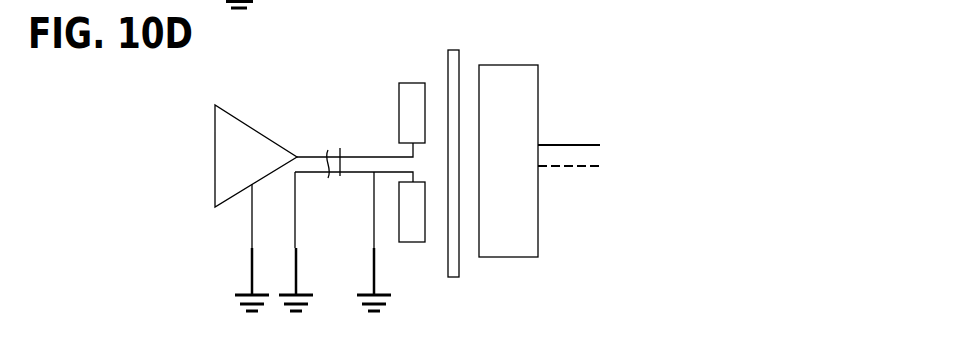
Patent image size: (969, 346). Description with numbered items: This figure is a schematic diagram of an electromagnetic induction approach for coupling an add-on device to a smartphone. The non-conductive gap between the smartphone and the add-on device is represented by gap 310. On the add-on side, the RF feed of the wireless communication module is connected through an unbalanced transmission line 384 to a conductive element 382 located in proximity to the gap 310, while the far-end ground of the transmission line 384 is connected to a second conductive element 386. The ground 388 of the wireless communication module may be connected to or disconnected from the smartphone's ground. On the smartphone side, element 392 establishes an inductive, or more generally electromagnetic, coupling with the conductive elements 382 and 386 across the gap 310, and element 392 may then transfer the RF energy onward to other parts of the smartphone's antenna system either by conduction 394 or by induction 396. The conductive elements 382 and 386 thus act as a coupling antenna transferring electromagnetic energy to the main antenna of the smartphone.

The non-conductive gap 310 is at (463, 48).
The conductive element 382 is at (398, 103).
The transmission line 384 is at (332, 150).
The conductive element 386 is at (412, 244).
The ground 388 is at (370, 281).
The element 392 is at (540, 100).
The conduction 394 is at (605, 145).
The induction 396 is at (605, 166).